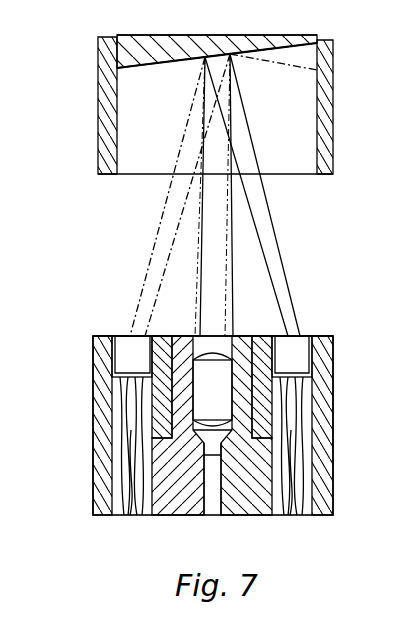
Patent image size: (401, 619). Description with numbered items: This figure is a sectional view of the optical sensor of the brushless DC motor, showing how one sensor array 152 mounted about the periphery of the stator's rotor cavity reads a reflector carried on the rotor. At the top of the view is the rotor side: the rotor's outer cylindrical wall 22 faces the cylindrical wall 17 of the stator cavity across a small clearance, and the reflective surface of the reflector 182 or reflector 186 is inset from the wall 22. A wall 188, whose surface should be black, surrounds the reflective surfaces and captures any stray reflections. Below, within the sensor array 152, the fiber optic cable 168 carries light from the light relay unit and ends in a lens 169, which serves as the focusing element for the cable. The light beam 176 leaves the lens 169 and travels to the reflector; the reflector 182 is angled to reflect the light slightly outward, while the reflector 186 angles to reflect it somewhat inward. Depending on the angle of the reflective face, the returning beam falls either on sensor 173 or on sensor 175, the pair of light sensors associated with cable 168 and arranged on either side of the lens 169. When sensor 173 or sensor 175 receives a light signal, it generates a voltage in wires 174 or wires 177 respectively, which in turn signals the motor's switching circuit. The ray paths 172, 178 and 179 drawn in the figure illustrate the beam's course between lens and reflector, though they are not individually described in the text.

The cylindrical wall 17 is at (332, 341).
The outer cylindrical wall 22 is at (329, 176).
The sensor array 152 is at (93, 461).
The fiber optic cable 168 is at (199, 497).
The lens 169 is at (226, 378).
The nominal light path 172 is at (160, 221).
The sensor 173 is at (123, 336).
The wires 174 is at (125, 424).
The sensor 175 is at (303, 337).
The light beam 176 is at (197, 276).
The wires 177 is at (298, 446).
The reflected light ray 178 is at (280, 259).
The transmitted light ray 179 is at (200, 304).
The reflector 182 is at (266, 36).
The reflector 186 is at (152, 46).
The wall 188 is at (314, 151).